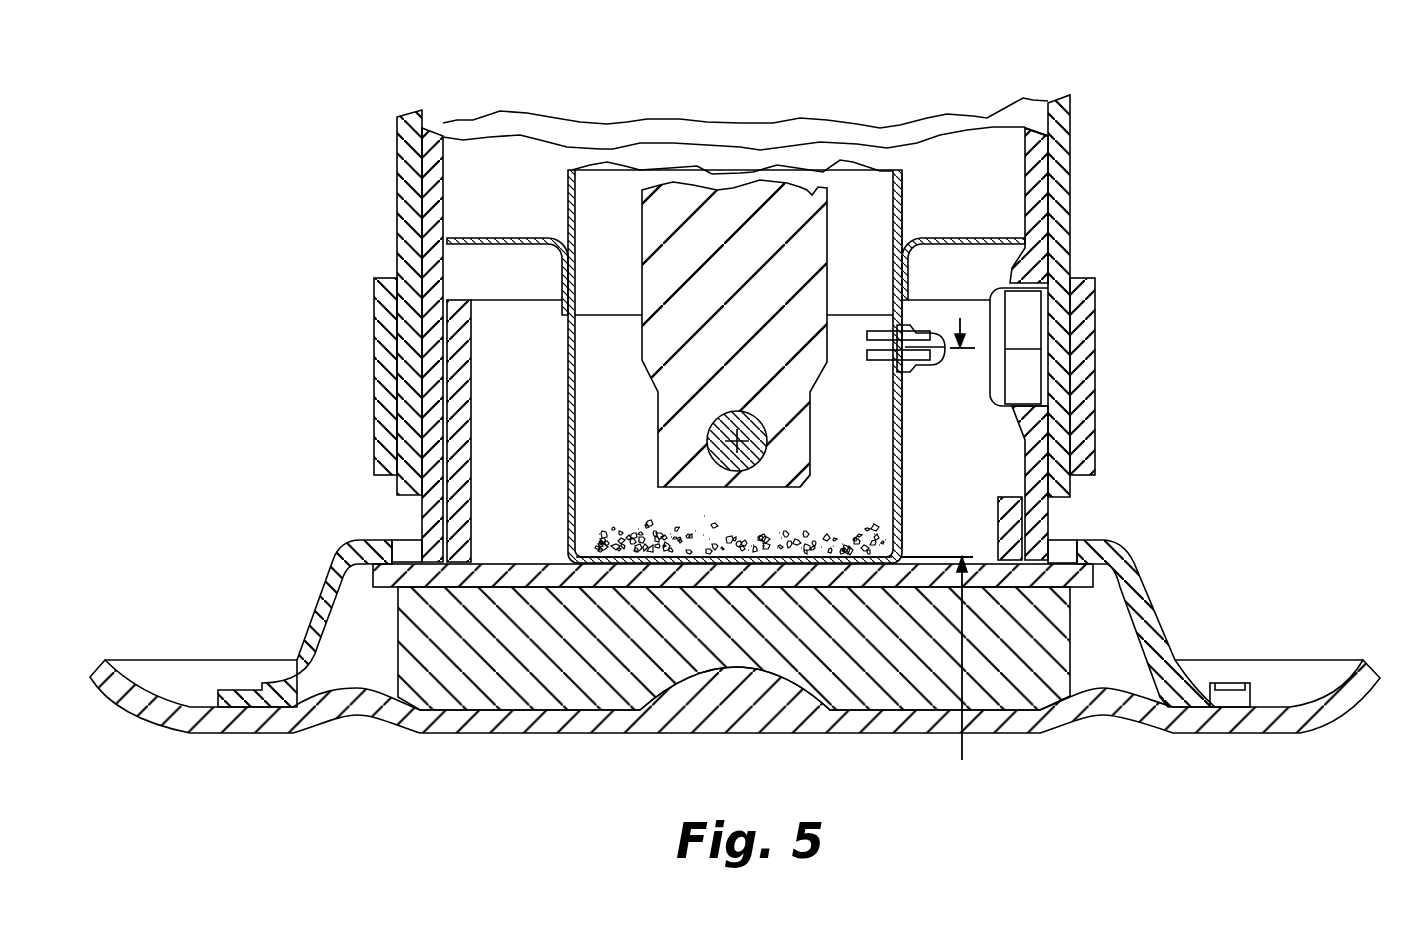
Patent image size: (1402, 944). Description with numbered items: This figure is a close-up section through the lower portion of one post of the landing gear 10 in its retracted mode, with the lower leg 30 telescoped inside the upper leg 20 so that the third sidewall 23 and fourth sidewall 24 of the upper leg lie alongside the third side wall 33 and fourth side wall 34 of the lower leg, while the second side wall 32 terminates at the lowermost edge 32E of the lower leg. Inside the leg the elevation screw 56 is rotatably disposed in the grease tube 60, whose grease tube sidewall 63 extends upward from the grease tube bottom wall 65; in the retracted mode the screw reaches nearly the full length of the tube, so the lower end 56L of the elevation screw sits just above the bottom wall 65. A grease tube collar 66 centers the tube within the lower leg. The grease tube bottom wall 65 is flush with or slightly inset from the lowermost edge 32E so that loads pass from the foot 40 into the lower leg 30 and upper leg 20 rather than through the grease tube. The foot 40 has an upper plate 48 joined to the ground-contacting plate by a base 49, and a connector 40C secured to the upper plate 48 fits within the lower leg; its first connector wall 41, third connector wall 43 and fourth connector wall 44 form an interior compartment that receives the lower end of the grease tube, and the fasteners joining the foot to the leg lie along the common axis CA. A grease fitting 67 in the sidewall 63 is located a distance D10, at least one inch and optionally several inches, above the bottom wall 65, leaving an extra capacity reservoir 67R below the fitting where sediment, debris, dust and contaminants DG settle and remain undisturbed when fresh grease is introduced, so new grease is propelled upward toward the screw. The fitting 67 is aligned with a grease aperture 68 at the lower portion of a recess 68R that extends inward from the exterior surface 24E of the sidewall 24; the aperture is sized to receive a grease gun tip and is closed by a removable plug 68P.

The landing gear 10 is at (352, 78).
The upper leg 20 is at (366, 272).
The third sidewall 23 is at (413, 247).
The lower leg 30 is at (400, 300).
The third side wall 33 is at (433, 195).
The fourth sidewall 24 is at (1086, 344).
The exterior surface 24E is at (1047, 178).
The fourth side wall 34 is at (1045, 192).
The foot 40 is at (735, 669).
The connector 40C is at (472, 427).
The first connector wall 41 is at (520, 313).
The third connector wall 43 is at (1000, 523).
The fourth connector wall 44 is at (465, 502).
The upper plate 48 is at (642, 592).
The base 49 is at (480, 734).
The second side wall 32 is at (712, 513).
The lowermost edge 32E is at (1123, 503).
The elevation screw 56 is at (760, 278).
The lower end of the elevation screw 56L is at (790, 487).
The grease tube 60 is at (772, 313).
The grease tube sidewall 63 is at (900, 200).
The grease tube bottom wall 65 is at (778, 556).
The grease tube collar 66 is at (545, 236).
The grease fitting 67 is at (930, 324).
The extra capacity reservoir 67R is at (645, 420).
The grease aperture 68 is at (1091, 366).
The plug 68P is at (1048, 398).
The recess 68R is at (1040, 262).
The common axis CA is at (755, 424).
The sediments DG is at (713, 512).
The distance D10 is at (942, 669).